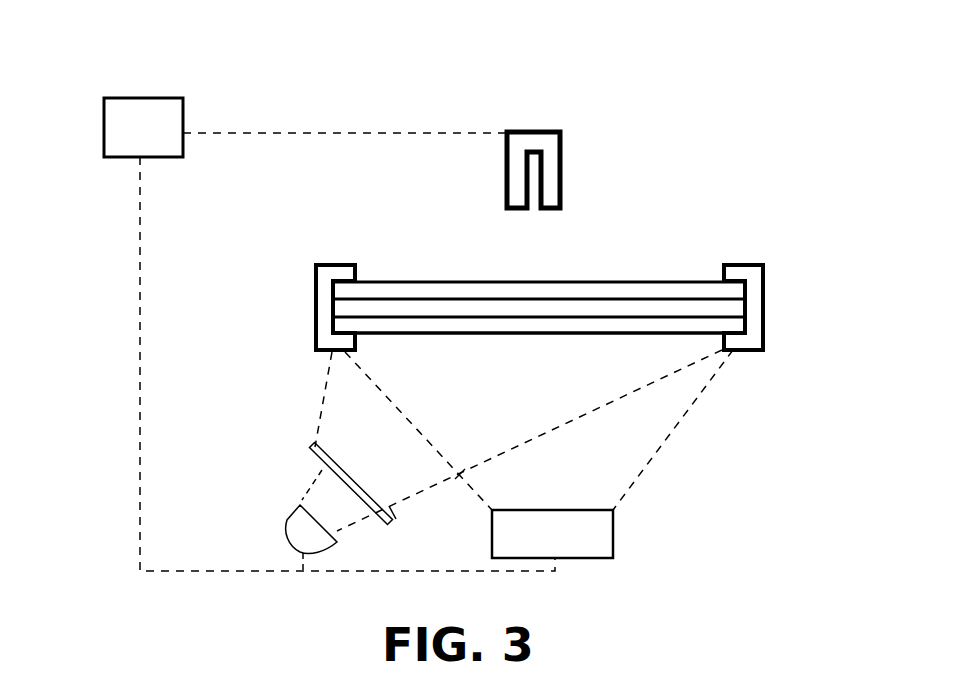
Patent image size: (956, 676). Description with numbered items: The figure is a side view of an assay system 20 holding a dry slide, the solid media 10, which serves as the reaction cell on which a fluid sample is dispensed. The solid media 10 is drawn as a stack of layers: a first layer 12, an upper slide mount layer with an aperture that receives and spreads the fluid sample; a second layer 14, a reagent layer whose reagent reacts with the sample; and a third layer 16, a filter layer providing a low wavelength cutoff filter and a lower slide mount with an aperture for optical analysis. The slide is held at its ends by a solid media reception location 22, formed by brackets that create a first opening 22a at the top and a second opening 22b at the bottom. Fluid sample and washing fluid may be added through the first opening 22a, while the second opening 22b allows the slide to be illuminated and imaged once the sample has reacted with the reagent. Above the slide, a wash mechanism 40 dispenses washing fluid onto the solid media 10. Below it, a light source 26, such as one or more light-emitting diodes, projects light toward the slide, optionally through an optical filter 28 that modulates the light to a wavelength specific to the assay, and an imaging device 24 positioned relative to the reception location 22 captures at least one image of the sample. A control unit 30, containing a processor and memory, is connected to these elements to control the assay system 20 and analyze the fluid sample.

The solid media 10 is at (605, 310).
The first layer 12 is at (733, 291).
The second layer 14 is at (733, 308).
The third layer 16 is at (735, 325).
The assay system 20 is at (58, 127).
The solid media reception location 22 is at (329, 270).
The first opening 22a is at (483, 275).
The second opening 22b is at (483, 340).
The imaging device 24 is at (552, 534).
The light source 26 is at (297, 526).
The optical filter 28 is at (318, 466).
The control unit 30 is at (143, 127).
The wash mechanism 40 is at (550, 173).